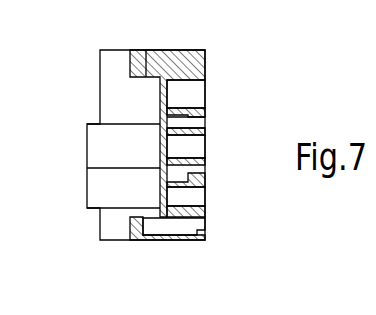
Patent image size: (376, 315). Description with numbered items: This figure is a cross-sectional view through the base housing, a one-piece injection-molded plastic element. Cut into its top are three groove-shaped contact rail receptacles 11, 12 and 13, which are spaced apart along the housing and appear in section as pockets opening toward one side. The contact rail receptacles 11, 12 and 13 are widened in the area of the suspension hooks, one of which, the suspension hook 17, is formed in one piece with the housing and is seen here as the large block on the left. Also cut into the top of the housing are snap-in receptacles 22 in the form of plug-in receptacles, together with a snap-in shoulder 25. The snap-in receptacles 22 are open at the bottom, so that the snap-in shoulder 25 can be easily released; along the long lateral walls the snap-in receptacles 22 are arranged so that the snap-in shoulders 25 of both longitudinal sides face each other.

The contact rail receptacle 11 is at (198, 92).
The contact rail receptacle 12 is at (193, 148).
The contact rail receptacle 13 is at (188, 197).
The suspension hook 17 is at (87, 124).
The snap-in receptacle 22 is at (167, 118).
The snap-in shoulder 25 is at (200, 109).